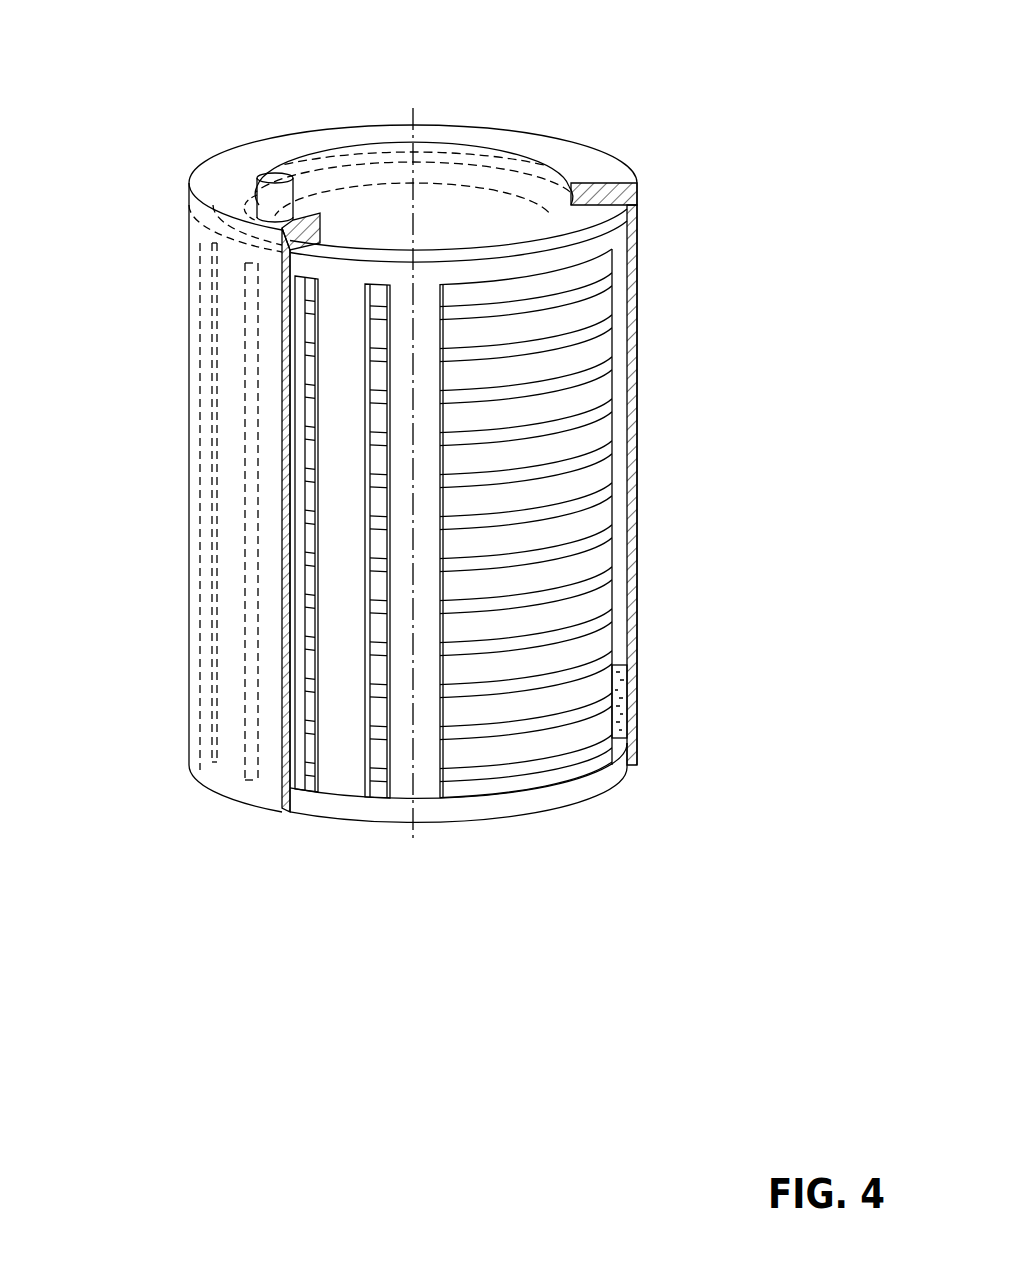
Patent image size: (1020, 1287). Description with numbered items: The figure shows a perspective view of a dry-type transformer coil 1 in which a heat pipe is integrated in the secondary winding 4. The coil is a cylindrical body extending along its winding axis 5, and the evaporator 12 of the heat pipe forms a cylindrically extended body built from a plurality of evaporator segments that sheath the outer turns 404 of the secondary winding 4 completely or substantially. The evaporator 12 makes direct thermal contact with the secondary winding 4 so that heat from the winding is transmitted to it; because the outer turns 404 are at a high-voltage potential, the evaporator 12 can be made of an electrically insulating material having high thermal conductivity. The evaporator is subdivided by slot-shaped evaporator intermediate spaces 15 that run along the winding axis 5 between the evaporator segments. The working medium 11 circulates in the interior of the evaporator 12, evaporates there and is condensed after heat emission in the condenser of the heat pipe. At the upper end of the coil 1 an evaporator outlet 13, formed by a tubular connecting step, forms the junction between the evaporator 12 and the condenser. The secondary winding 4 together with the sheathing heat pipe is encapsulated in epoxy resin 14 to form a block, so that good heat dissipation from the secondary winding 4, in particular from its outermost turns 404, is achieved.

The transformer coil 1 is at (297, 123).
The winding axis 5 is at (413, 125).
The epoxy resin 14 is at (619, 198).
The evaporator outlet 13 is at (274, 194).
The evaporator intermediate spaces 15 is at (252, 660).
The evaporator 12 is at (622, 408).
The secondary winding 4 is at (571, 548).
The outer turns 404 is at (598, 592).
The working medium 11 is at (626, 728).